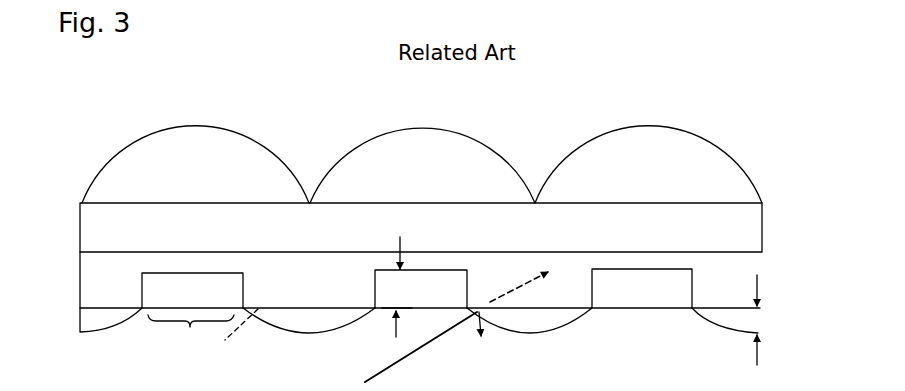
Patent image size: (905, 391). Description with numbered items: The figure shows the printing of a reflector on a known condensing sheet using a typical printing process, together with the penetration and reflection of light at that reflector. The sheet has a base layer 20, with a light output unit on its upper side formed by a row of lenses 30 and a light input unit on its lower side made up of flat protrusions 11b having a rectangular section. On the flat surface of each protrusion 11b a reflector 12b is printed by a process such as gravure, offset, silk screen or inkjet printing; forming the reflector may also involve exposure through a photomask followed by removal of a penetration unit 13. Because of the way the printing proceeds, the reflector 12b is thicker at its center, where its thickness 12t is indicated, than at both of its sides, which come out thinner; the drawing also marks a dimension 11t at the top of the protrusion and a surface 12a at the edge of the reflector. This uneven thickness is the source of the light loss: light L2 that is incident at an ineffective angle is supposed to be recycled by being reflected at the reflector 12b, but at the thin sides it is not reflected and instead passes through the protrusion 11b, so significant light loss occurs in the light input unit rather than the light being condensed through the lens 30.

The lens 30 is at (678, 126).
The base layer 20 is at (732, 238).
The penetration unit 13 is at (190, 331).
The groove inclined surface 12a is at (264, 306).
The protrusion top gap 11t is at (406, 257).
The thickness of the center of the reflector 12t is at (762, 296).
The protrusion 11b is at (594, 286).
The reflector 12b is at (571, 323).
The light incident at an ineffective angle L2 is at (429, 345).